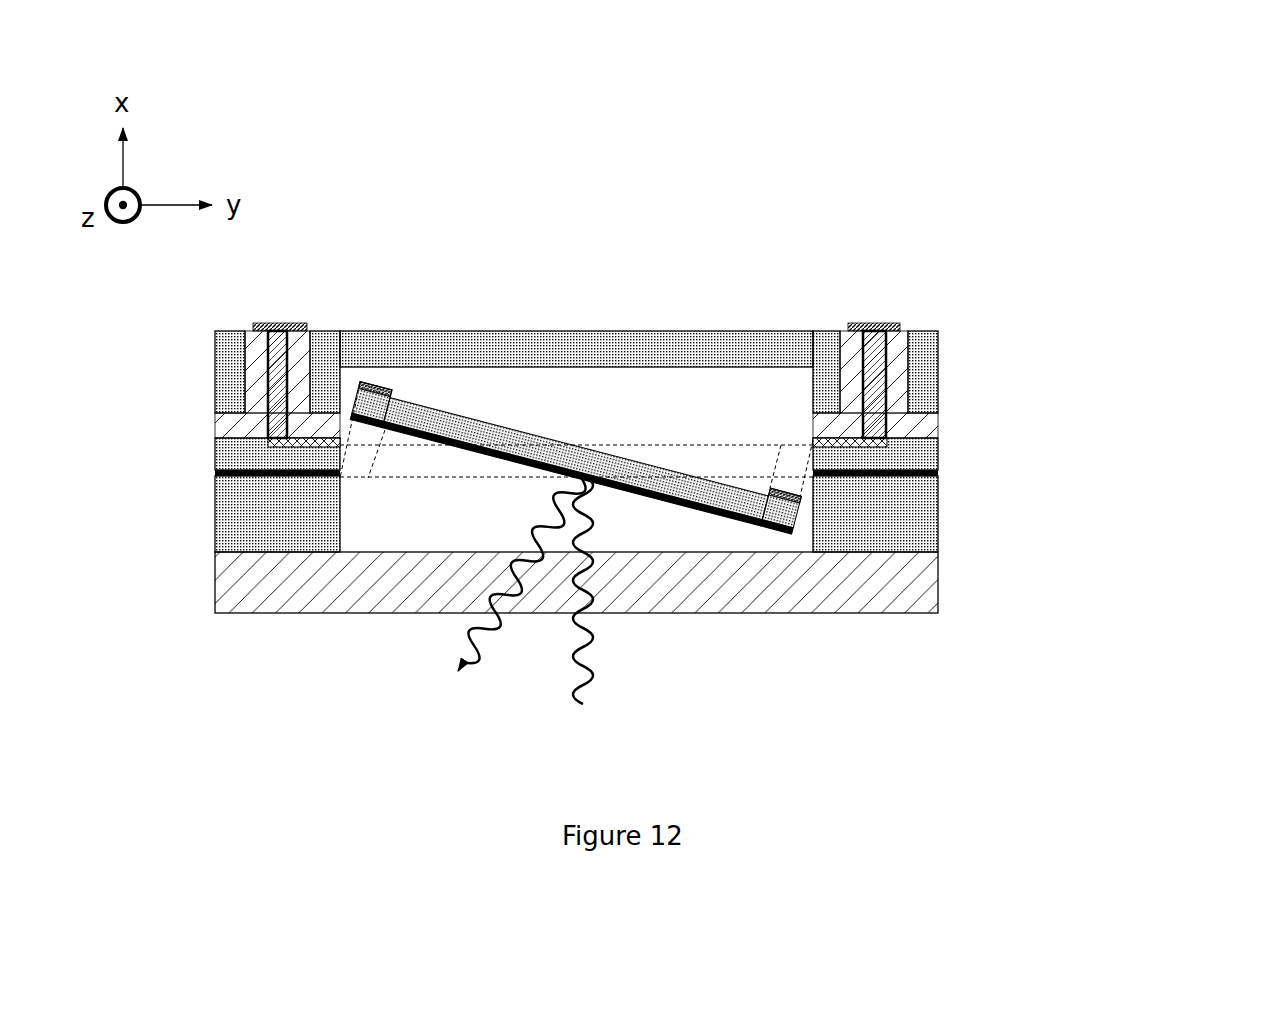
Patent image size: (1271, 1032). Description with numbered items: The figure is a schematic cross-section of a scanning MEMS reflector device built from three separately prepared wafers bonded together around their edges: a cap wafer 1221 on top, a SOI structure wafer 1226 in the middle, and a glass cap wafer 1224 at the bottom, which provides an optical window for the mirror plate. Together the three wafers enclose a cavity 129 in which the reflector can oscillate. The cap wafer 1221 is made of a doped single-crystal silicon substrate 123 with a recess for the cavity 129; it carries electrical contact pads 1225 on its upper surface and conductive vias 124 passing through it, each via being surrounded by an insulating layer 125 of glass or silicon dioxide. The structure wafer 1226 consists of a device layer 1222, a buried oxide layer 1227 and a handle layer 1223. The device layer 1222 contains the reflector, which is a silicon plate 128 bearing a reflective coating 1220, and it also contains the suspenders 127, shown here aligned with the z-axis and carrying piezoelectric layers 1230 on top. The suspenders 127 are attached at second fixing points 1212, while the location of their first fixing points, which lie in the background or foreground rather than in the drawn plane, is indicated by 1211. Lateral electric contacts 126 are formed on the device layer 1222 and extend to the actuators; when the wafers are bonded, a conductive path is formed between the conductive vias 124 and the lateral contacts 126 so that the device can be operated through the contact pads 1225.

The silicon substrate 123 is at (528, 357).
The conductive via 124 is at (272, 346).
The insulating layer 125 is at (302, 376).
The lateral electric contact 126 is at (270, 444).
The suspender 127 is at (374, 406).
The silicon plate 128 is at (648, 473).
The cavity 129 is at (708, 403).
The first fixing point 1211 is at (353, 464).
The second fixing point 1212 is at (391, 409).
The reflective coating 1220 is at (700, 512).
The cap wafer 1221 is at (597, 307).
The device layer 1222 is at (607, 586).
The handle layer 1223 is at (990, 477).
The glass cap wafer 1224 is at (1032, 550).
The electrical contact pad 1225 is at (280, 326).
The structure wafer 1226 is at (664, 586).
The buried oxide layer 1227 is at (254, 478).
The piezoelectric layer 1230 is at (374, 384).